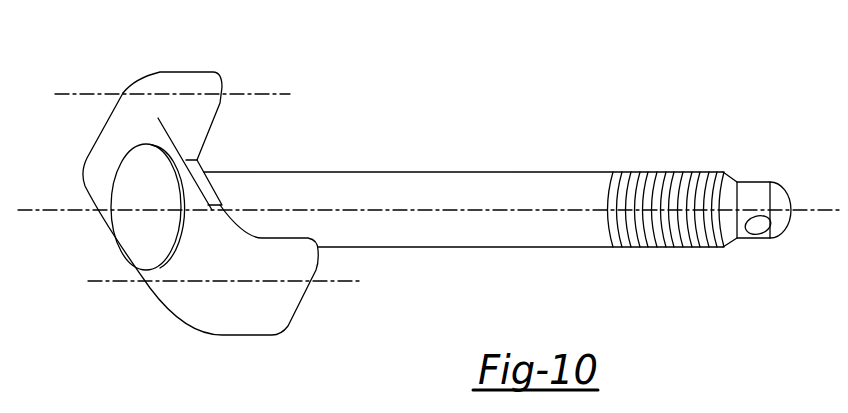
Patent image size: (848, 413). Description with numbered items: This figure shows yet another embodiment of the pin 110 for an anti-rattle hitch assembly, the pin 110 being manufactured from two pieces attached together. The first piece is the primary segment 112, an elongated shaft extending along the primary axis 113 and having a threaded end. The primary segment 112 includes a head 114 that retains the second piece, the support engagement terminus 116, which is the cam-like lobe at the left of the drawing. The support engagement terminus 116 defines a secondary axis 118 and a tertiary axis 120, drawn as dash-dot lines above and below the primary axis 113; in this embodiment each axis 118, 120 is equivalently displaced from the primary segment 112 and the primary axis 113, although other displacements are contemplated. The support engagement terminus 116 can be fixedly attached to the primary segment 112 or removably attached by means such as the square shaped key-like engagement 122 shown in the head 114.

The pin 110 is at (521, 159).
The primary segment 112 is at (422, 172).
The primary axis 113 is at (483, 211).
The head 114 is at (133, 237).
The support engagement terminus 116 is at (190, 303).
The secondary axis 118 is at (347, 283).
The tertiary axis 120 is at (77, 94).
The square shaped key-like engagement 122 is at (200, 160).